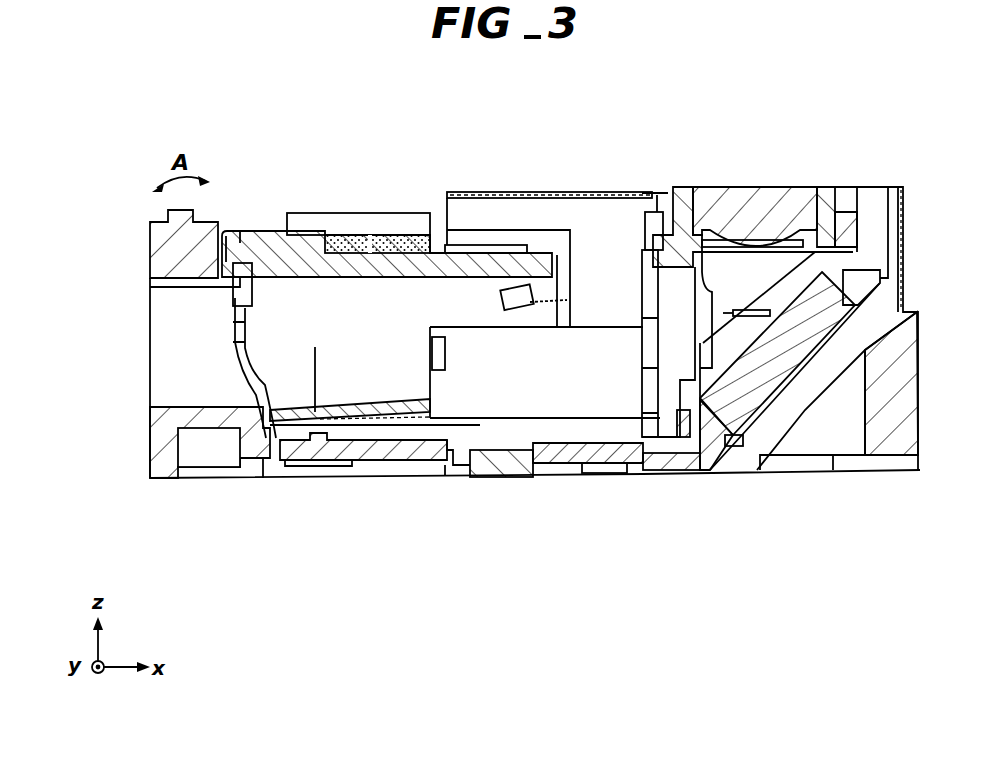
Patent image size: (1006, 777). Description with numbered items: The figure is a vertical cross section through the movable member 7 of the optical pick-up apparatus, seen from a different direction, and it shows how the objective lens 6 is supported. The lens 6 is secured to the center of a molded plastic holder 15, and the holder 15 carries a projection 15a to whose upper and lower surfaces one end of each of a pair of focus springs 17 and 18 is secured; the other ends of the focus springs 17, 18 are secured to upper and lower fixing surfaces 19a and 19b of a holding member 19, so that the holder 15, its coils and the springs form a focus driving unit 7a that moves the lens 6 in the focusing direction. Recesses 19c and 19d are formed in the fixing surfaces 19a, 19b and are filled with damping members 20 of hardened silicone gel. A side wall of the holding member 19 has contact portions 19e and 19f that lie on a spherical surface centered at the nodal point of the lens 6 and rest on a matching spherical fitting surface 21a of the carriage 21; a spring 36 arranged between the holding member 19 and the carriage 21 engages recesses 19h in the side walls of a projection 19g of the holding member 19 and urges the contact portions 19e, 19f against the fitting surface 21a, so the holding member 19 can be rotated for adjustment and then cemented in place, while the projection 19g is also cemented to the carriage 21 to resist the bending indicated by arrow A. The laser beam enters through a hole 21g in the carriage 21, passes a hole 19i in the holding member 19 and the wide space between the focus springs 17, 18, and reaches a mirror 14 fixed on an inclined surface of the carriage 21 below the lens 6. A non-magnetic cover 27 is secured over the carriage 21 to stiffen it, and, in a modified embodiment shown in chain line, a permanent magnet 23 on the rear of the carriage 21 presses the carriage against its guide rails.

The objective lens 6 is at (745, 186).
The movable member 7 is at (692, 492).
The focus driving unit 7a is at (685, 172).
The mirror 14 is at (823, 271).
The holder 15 is at (833, 186).
The projection of the holder 15a is at (675, 390).
The focus spring 17 is at (458, 230).
The focus spring 18 is at (441, 440).
The holding member 19 is at (256, 229).
The upper fixing surface of the holding member 19a is at (280, 232).
The lower fixing surface of the holding member 19b is at (290, 440).
The recess 19c is at (352, 235).
The recess 19d is at (378, 440).
The contact portion 19e is at (226, 229).
The contact portions 19f is at (262, 372).
The projection of the holding member 19g is at (512, 262).
The recess 19h is at (505, 305).
The hole 19i is at (338, 278).
The damping member 20 is at (397, 234).
The carriage 21 is at (150, 447).
The fitting surface 21a is at (217, 268).
The hole 21g is at (177, 287).
The permanent magnet 23 is at (502, 478).
The cover 27 is at (483, 192).
The spring 36 is at (553, 235).